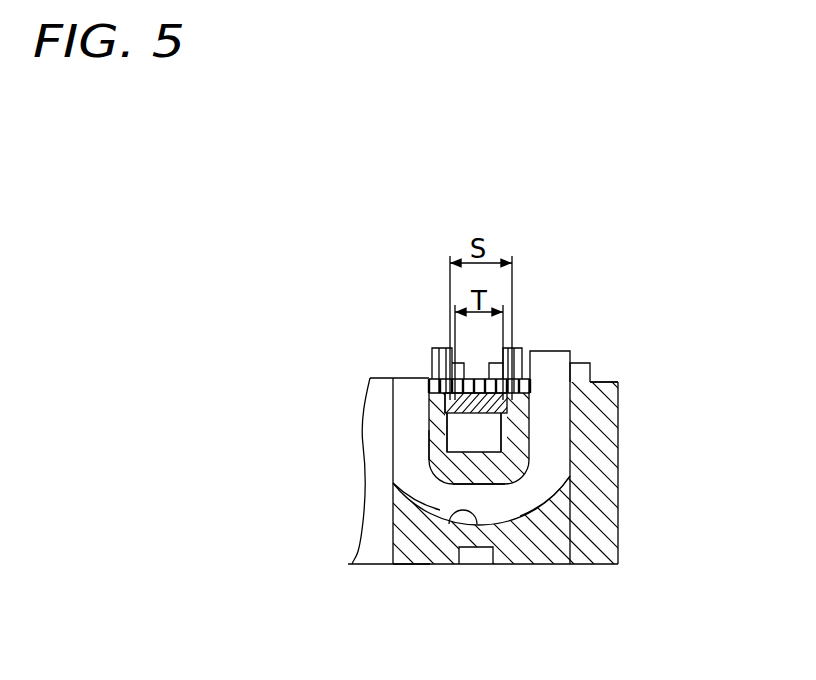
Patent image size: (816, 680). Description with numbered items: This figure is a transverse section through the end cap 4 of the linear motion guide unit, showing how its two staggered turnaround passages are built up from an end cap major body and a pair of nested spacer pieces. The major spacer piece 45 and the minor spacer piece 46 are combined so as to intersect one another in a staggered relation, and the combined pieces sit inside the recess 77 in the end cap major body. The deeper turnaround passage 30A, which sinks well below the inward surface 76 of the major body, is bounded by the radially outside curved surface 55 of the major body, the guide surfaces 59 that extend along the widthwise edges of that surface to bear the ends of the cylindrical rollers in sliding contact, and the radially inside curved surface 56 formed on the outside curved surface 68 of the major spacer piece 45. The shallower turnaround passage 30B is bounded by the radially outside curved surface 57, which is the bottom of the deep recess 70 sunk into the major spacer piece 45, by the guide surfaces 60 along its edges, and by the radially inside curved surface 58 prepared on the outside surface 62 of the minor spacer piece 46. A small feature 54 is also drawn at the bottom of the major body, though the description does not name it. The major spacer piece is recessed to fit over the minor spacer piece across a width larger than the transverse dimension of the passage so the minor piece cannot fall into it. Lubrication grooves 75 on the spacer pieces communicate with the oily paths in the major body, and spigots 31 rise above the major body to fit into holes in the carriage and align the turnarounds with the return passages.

The end cap 4 is at (598, 540).
The turnaround passage 30A is at (598, 497).
The turnaround passage 30B is at (432, 438).
The spigot 31 is at (444, 348).
The major spacer piece 45 is at (512, 452).
The minor spacer piece 46 is at (508, 403).
The bottom projection 54 is at (473, 557).
The radially outside curved surface 55 is at (460, 516).
The radially inside curved surface 56 is at (483, 486).
The radially outside curved surface 57 is at (437, 437).
The radially inside curved surface 58 is at (445, 425).
The guide surface 59 is at (415, 390).
The guide surface 60 is at (490, 420).
The outside surface 62 is at (500, 423).
The outside curved surface 68 is at (387, 560).
The deep recess 70 is at (525, 515).
The lubrication groove 75 is at (519, 390).
The inward surface 76 is at (604, 382).
The recess 77 is at (425, 477).